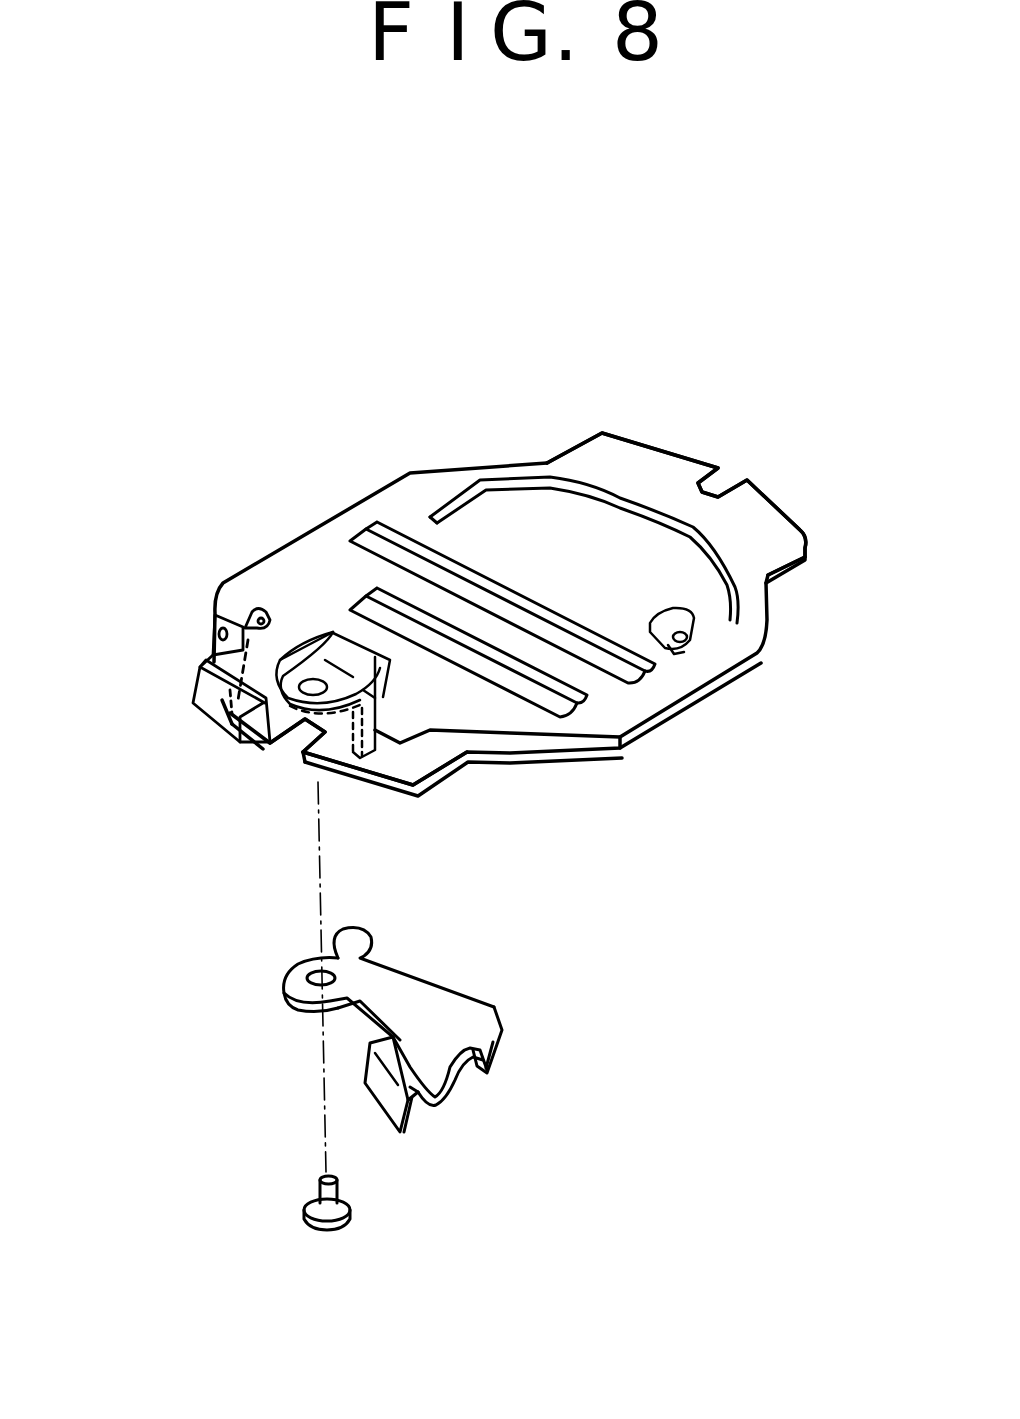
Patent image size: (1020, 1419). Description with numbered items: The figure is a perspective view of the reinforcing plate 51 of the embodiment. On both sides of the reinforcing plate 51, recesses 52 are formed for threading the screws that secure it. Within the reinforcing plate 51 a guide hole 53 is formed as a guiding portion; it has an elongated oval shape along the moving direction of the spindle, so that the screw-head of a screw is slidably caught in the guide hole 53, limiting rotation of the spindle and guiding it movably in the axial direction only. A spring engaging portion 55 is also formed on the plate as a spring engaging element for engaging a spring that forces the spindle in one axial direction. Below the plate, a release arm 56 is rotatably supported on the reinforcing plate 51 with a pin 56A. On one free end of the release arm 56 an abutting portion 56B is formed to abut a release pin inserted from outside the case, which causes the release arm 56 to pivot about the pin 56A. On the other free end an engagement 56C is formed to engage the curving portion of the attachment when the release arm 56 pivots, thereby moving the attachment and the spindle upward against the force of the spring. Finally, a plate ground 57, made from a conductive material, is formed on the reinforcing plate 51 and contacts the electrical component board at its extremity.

The reinforcing plate 51 is at (633, 278).
The recess 52 is at (737, 482).
The guide hole 53 is at (367, 523).
The spring engaging portion 55 is at (693, 620).
The release arm 56 is at (387, 997).
The pin 56A is at (330, 1226).
The abutting portion 56B is at (402, 1133).
The engagement 56C is at (503, 1052).
The plate ground 57 is at (210, 725).